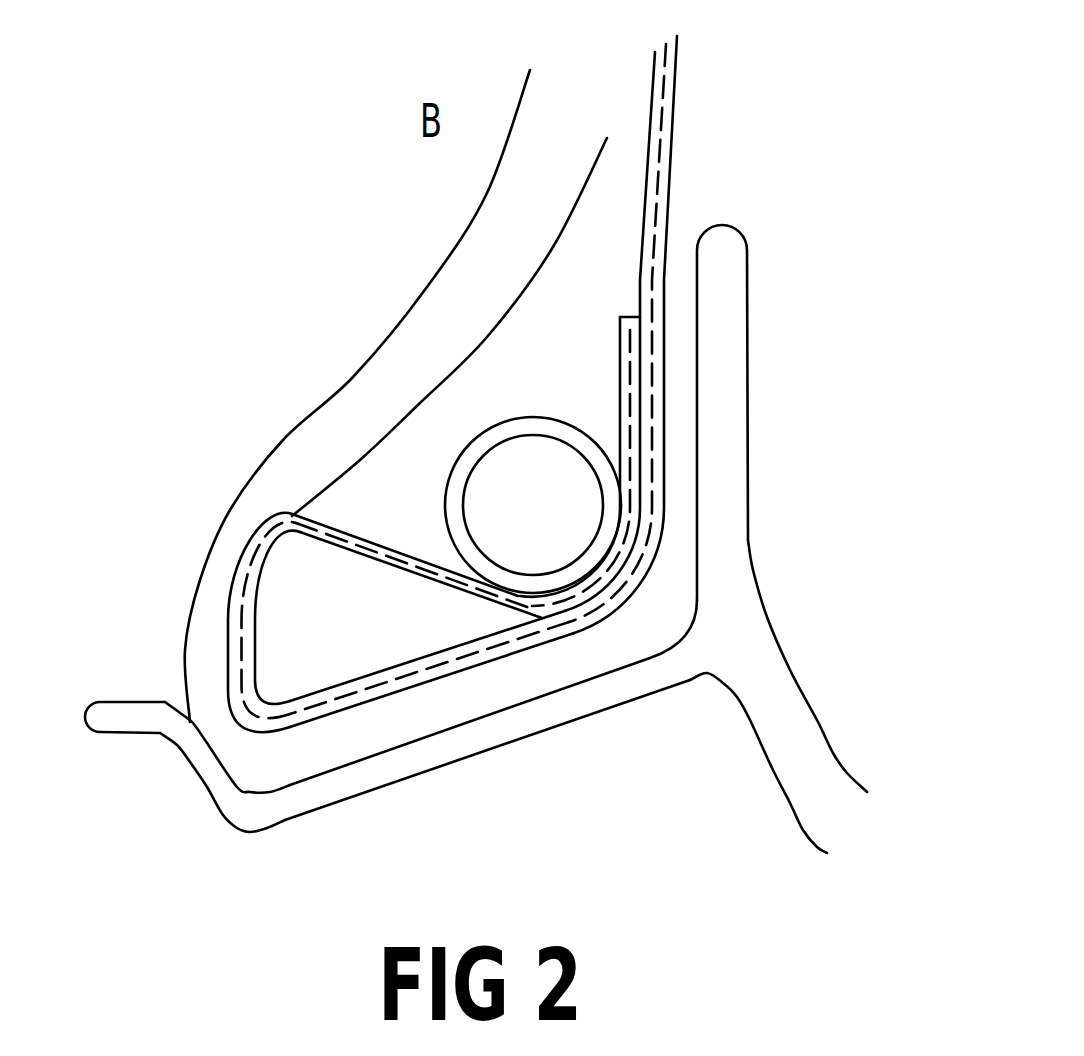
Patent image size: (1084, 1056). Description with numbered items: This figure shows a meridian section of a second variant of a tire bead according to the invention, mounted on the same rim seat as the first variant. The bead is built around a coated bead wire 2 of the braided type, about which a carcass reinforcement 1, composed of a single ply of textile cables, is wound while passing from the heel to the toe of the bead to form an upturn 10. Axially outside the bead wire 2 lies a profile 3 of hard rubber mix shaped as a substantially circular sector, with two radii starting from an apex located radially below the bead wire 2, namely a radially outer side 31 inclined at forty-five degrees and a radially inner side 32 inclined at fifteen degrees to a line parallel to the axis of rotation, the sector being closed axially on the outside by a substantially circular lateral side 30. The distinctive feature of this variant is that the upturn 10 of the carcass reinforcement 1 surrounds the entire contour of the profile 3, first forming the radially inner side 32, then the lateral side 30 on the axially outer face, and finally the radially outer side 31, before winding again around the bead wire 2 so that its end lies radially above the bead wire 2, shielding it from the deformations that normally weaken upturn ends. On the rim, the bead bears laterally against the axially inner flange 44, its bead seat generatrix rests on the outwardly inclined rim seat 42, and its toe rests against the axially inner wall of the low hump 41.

The carcass reinforcement 1 is at (658, 163).
The coated bead wire 2 is at (558, 497).
The profile 3 is at (329, 624).
The upturn 10 is at (617, 353).
The lateral side 30 is at (247, 602).
The radially outer side 31 is at (370, 558).
The radially inner side 32 is at (343, 697).
The hump 41 is at (210, 773).
The rim seat 42 is at (502, 733).
The axially inner flange 44 is at (718, 418).